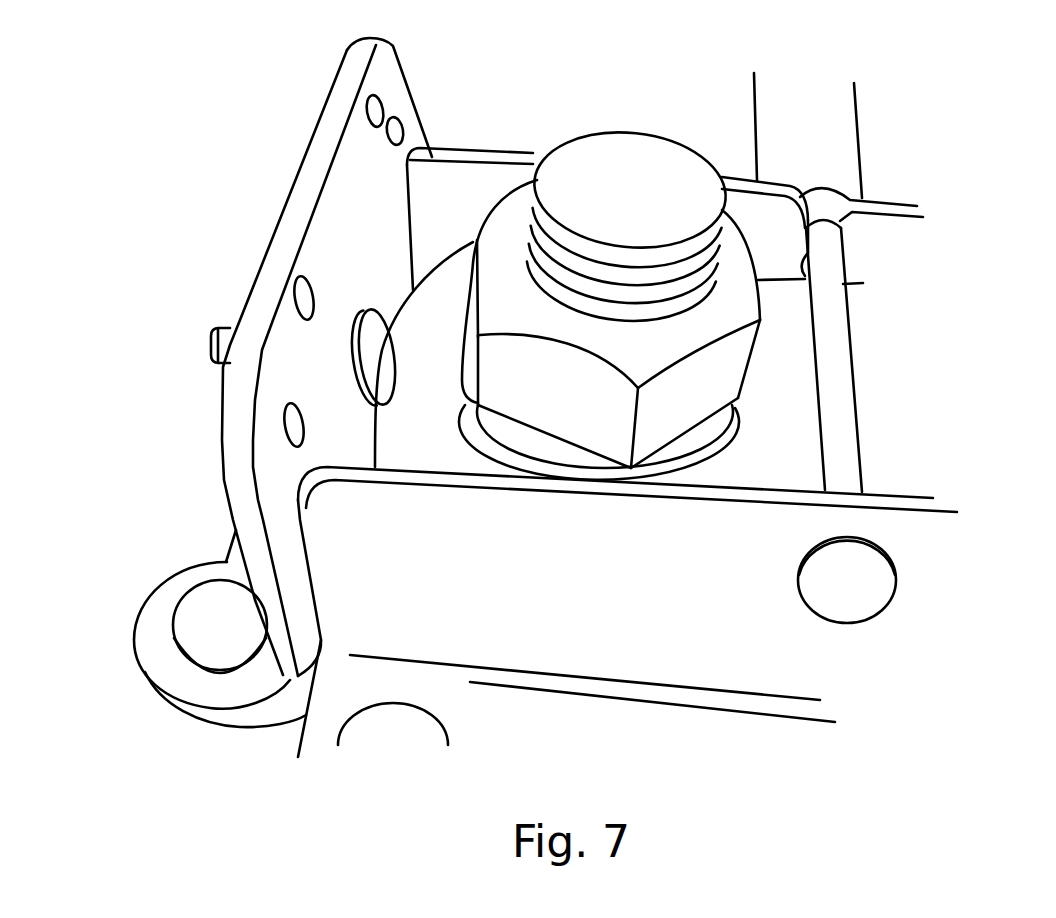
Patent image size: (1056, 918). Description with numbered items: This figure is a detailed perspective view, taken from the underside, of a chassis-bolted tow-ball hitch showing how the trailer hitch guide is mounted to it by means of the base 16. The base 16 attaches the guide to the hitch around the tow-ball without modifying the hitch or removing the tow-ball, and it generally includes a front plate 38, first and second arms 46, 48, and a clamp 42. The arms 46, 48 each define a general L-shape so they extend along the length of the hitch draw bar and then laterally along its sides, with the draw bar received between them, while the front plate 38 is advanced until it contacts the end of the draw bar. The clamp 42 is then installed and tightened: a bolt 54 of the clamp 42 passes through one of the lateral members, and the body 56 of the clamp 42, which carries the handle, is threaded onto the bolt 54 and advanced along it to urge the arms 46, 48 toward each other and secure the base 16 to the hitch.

The base 16 is at (935, 362).
The front plate 38 is at (325, 128).
The clamp 42 is at (820, 128).
The first arm 46 is at (454, 182).
The second arm 48 is at (405, 507).
The bolt 54 is at (842, 420).
The body 56 is at (837, 178).